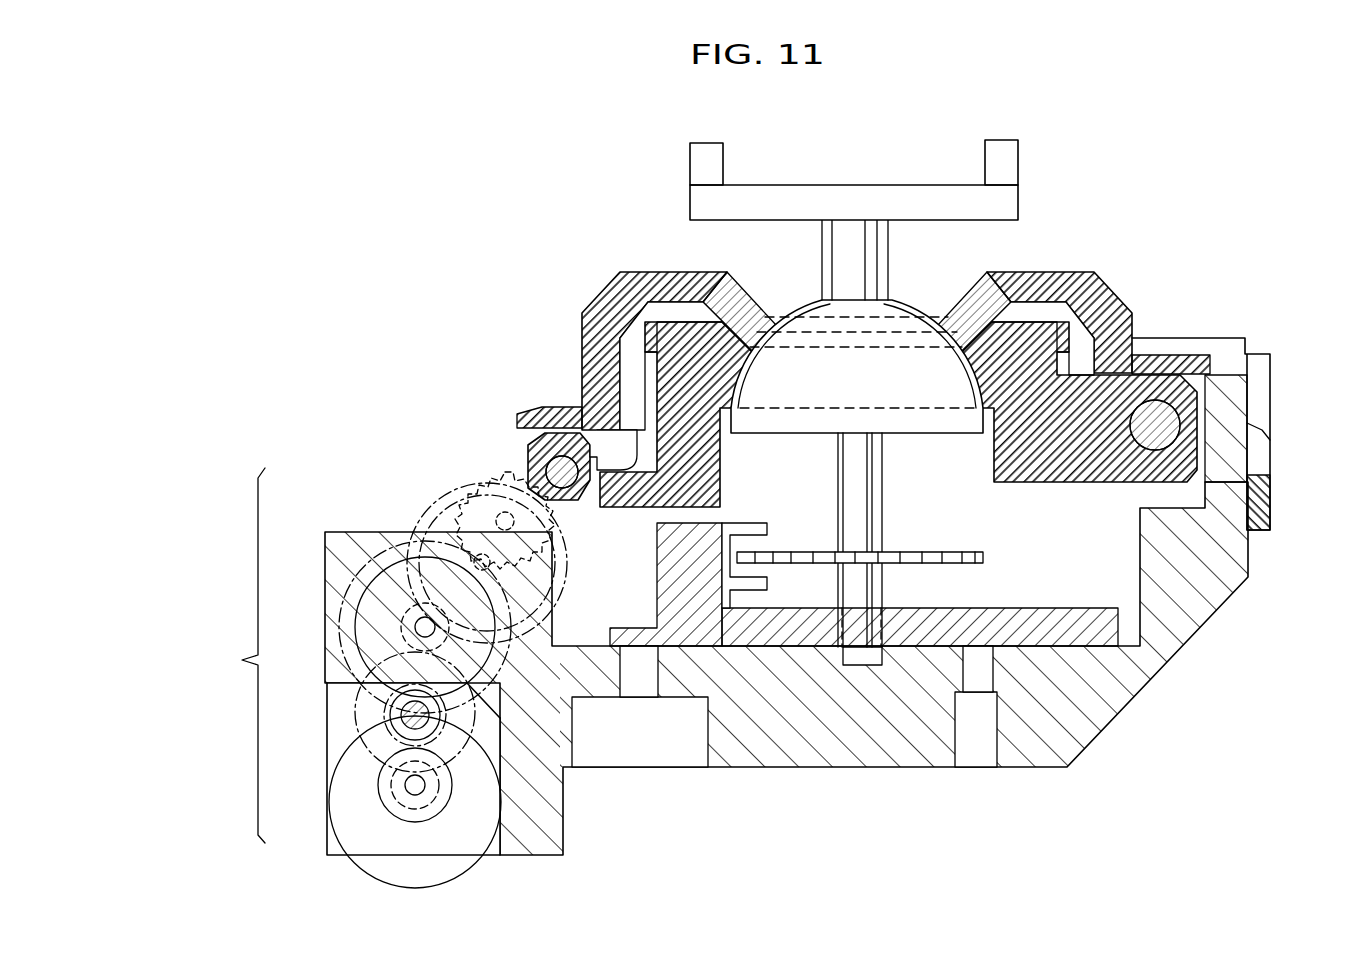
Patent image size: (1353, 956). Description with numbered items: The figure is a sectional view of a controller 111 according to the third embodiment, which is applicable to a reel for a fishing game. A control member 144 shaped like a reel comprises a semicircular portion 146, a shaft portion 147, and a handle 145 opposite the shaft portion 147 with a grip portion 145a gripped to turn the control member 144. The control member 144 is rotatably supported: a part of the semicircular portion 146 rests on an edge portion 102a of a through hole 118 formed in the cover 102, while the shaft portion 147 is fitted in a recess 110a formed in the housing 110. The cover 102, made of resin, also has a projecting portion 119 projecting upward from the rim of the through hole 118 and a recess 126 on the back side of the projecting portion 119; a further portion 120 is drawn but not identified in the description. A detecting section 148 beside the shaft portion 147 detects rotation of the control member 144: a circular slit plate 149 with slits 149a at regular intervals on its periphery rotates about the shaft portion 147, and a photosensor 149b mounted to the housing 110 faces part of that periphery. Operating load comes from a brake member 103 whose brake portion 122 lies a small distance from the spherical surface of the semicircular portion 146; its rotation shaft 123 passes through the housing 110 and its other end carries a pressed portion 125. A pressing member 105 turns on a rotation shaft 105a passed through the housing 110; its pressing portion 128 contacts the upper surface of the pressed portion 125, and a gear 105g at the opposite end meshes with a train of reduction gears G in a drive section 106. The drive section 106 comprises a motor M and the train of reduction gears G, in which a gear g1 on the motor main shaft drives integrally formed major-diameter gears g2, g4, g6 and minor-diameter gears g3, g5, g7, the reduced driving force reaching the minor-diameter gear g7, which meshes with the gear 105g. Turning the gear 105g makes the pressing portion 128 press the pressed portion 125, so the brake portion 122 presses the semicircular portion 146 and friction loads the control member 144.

The cover 102 is at (1216, 350).
The edge portion 102a is at (756, 332).
The brake member 103 is at (1143, 410).
The pressing member 105 is at (537, 452).
The rotation shaft 105a is at (563, 485).
The gear 105g is at (492, 470).
The drive section 106 is at (404, 444).
The housing 110 is at (1128, 680).
The recess 110a is at (870, 652).
The controller 111 is at (608, 205).
The through hole 118 is at (770, 328).
The projecting portion 119 is at (597, 302).
The inner housing 120 is at (692, 342).
The brake portion 122 is at (740, 370).
The rotation shaft 123 is at (1176, 400).
The pressed portion 125 is at (638, 497).
The recess 126 is at (650, 325).
The pressing portion 128 is at (590, 422).
The control member 144 is at (895, 165).
The handle 145 is at (821, 200).
The grip portion 145a is at (702, 170).
The semicircular portion 146 is at (890, 348).
The shaft portion 147 is at (862, 470).
The detecting section 148 is at (792, 592).
The circular slit plate 149 is at (985, 556).
The slits 149a is at (953, 550).
The photosensor 149b is at (752, 523).
The train of reduction gears G is at (235, 655).
The motor M is at (464, 856).
The gear g1 is at (388, 790).
The major-diameter gear g2 is at (362, 752).
The minor-diameter gear g3 is at (378, 708).
The major-diameter gear g4 is at (355, 636).
The minor-diameter gear g5 is at (326, 548).
The major-diameter gear g6 is at (422, 518).
The minor-diameter gear g7 is at (450, 500).